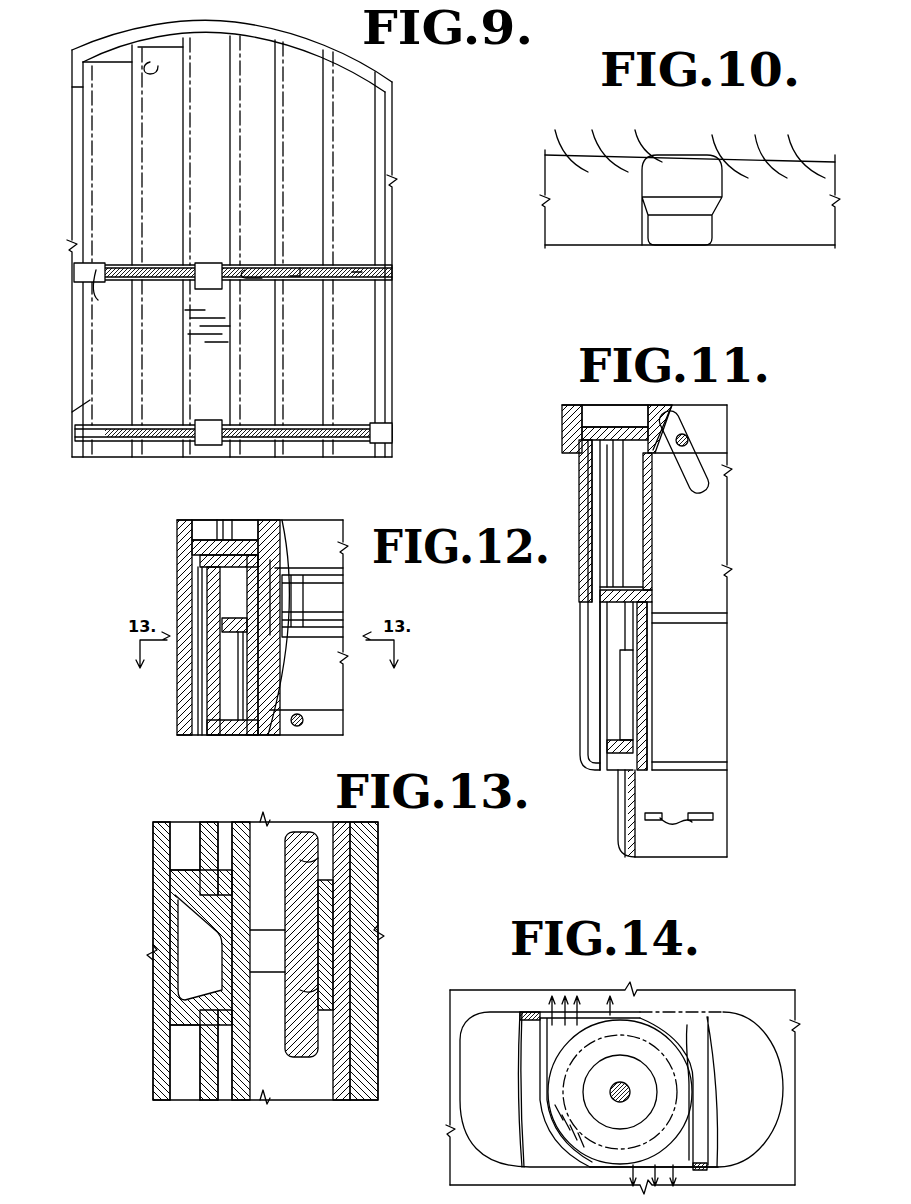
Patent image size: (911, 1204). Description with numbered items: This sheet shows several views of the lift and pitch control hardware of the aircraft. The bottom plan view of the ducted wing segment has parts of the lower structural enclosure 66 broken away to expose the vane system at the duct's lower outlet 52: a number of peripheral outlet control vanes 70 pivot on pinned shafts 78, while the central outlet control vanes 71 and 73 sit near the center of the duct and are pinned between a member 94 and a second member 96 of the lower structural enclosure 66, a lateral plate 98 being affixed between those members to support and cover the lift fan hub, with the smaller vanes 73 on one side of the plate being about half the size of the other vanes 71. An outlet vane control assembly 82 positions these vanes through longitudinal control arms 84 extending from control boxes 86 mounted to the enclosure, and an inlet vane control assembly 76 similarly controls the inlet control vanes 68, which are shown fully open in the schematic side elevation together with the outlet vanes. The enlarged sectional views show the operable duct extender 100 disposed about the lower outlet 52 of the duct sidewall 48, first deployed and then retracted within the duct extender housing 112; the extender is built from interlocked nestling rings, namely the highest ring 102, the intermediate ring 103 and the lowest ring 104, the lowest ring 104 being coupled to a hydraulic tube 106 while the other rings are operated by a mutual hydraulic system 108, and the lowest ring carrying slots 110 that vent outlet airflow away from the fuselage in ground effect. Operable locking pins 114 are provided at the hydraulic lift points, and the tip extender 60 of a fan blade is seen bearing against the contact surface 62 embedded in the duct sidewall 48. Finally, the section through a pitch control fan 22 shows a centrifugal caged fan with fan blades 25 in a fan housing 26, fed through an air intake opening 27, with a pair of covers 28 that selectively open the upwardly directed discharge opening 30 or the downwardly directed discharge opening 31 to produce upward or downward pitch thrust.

In FIG. 14, the pitch control fan 22 is at (722, 1012).
In FIG. 14, the fan blades 25 is at (540, 1107).
In FIG. 14, the fan housing 26 is at (763, 1040).
In FIG. 14, the air intake opening 27 is at (637, 1060).
In FIG. 14, the covers 28 is at (545, 1012).
In FIG. 14, the discharge opening 30 is at (585, 1015).
In FIG. 14, the discharge opening 31 is at (695, 1160).
In FIG. 12, the duct sidewall 48 is at (274, 562).
In FIG. 11, the lower outlet 52 is at (720, 440).
In FIG. 12, the tip extender 60 is at (295, 607).
In FIG. 12, the contact surface 62 is at (273, 627).
In FIG. 9, the lower structural enclosure 66 is at (106, 292).
In FIG. 10, the inlet control vanes 68 is at (570, 130).
In FIG. 9, the peripheral outlet control vanes 70 is at (130, 72).
In FIG. 10, the peripheral outlet control vanes 70 is at (818, 237).
In FIG. 11, the peripheral outlet control vanes 70 is at (700, 482).
In FIG. 12, the peripheral outlet control vanes 70 is at (340, 723).
In FIG. 9, the central outlet control vanes 71 is at (156, 420).
In FIG. 10, the central outlet control vanes 71 is at (785, 285).
In FIG. 9, the central outlet control vanes 73 is at (252, 420).
In FIG. 10, the central outlet control vanes 73 is at (748, 255).
In FIG. 9, the inlet vane control assembly 76 is at (96, 396).
In FIG. 9, the pinned shafts 78 is at (152, 62).
In FIG. 11, the pinned shafts 78 is at (690, 430).
In FIG. 12, the pinned shafts 78 is at (297, 727).
In FIG. 9, the outlet vane control assembly 82 is at (370, 280).
In FIG. 9, the longitudinal control arms 84 is at (355, 268).
In FIG. 9, the control boxes 86 is at (210, 265).
In FIG. 9, the member 94 is at (98, 265).
In FIG. 9, the second member 96 is at (388, 435).
In FIG. 9, the lateral plate 98 is at (216, 371).
In FIG. 11, the duct extender 100 is at (585, 500).
In FIG. 13, the duct extender 100 is at (361, 853).
In FIG. 11, the highest ring 102 is at (580, 606).
In FIG. 12, the highest ring 102 is at (210, 540).
In FIG. 13, the highest ring 102 is at (213, 1100).
In FIG. 11, the intermediate ring 103 is at (590, 646).
In FIG. 12, the intermediate ring 103 is at (216, 578).
In FIG. 13, the intermediate ring 103 is at (247, 1100).
In FIG. 11, the lowest ring 104 is at (620, 810).
In FIG. 12, the lowest ring 104 is at (217, 627).
In FIG. 13, the lowest ring 104 is at (330, 1100).
In FIG. 11, the hydraulic tube 106 is at (625, 713).
In FIG. 11, the mutual hydraulic system 108 is at (613, 468).
In FIG. 11, the slots 110 is at (679, 828).
In FIG. 12, the duct extender housing 112 is at (200, 563).
In FIG. 13, the duct extender housing 112 is at (162, 1015).
In FIG. 12, the locking pins 114 is at (212, 703).